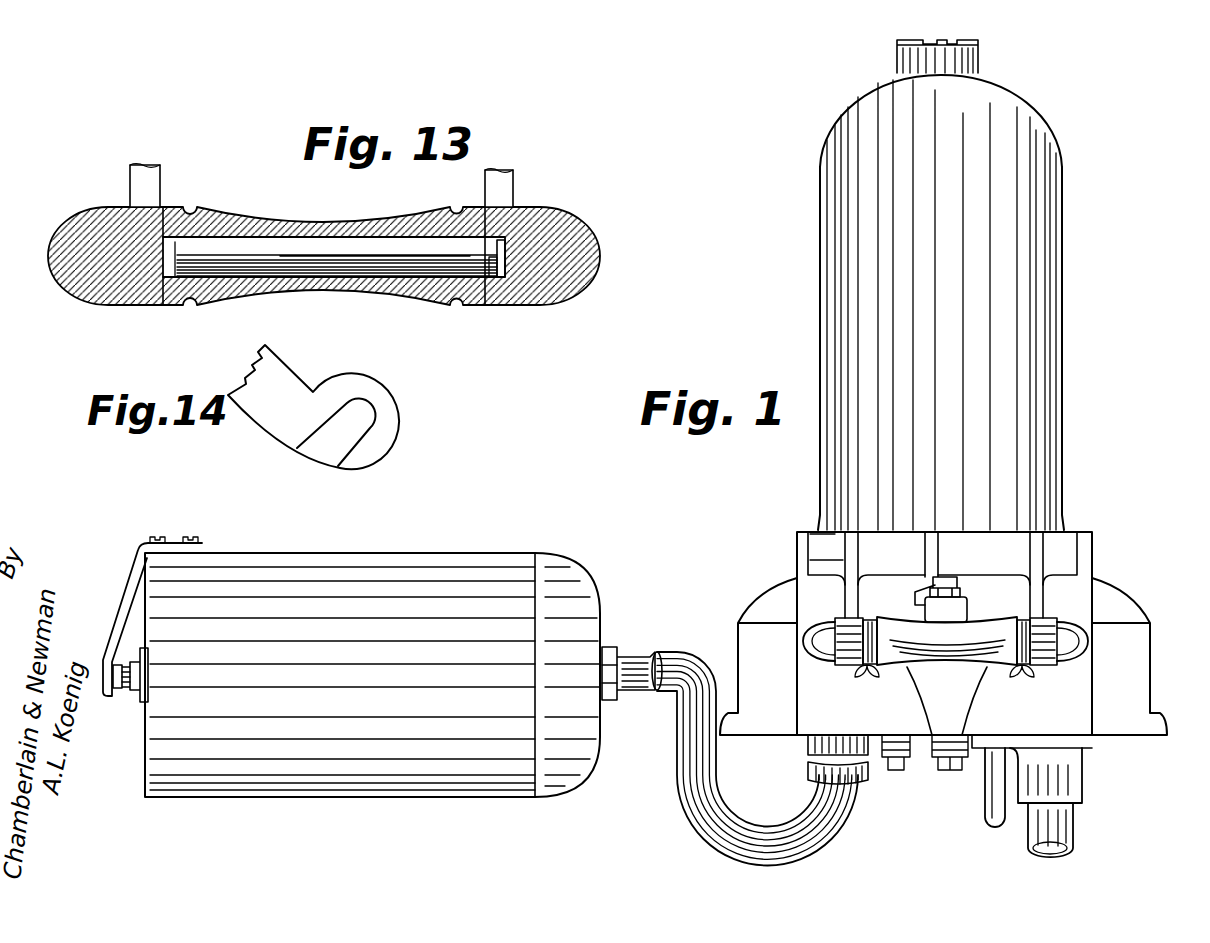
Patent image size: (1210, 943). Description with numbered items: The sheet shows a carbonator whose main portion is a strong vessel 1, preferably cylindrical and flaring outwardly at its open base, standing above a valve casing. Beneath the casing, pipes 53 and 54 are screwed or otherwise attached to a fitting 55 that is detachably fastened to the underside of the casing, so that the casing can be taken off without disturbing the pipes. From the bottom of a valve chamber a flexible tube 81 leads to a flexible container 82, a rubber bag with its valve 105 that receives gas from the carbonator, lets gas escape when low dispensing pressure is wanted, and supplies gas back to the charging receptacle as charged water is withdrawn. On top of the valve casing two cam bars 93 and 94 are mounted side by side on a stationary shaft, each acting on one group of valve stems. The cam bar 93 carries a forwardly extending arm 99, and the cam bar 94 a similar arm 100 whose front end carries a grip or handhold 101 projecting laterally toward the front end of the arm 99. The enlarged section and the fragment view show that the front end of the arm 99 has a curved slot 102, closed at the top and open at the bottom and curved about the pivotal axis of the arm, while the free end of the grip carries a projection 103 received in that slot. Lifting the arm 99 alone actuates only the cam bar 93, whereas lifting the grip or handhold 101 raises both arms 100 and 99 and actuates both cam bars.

In FIG. 1, the vessel 1 is at (1012, 295).
In FIG. 1, the cam bar 93 is at (990, 537).
In FIG. 1, the cam bar 94 is at (882, 548).
In FIG. 13, the arm 99 is at (503, 187).
In FIG. 14, the arm 99 is at (265, 403).
In FIG. 1, the arm 99 is at (1037, 565).
In FIG. 13, the arm 100 is at (150, 182).
In FIG. 1, the arm 100 is at (852, 587).
In FIG. 13, the grip or handhold 101 is at (330, 283).
In FIG. 1, the grip or handhold 101 is at (910, 642).
In FIG. 13, the curved slot 102 is at (510, 253).
In FIG. 14, the curved slot 102 is at (333, 445).
In FIG. 13, the projection 103 is at (493, 267).
In FIG. 1, the flexible tube 81 is at (808, 750).
In FIG. 1, the flexible container 82 is at (385, 582).
In FIG. 1, the valve 105 is at (130, 682).
In FIG. 1, the fitting 55 is at (1067, 768).
In FIG. 1, the pipe 54 is at (1058, 833).
In FIG. 1, the pipe 53 is at (987, 807).